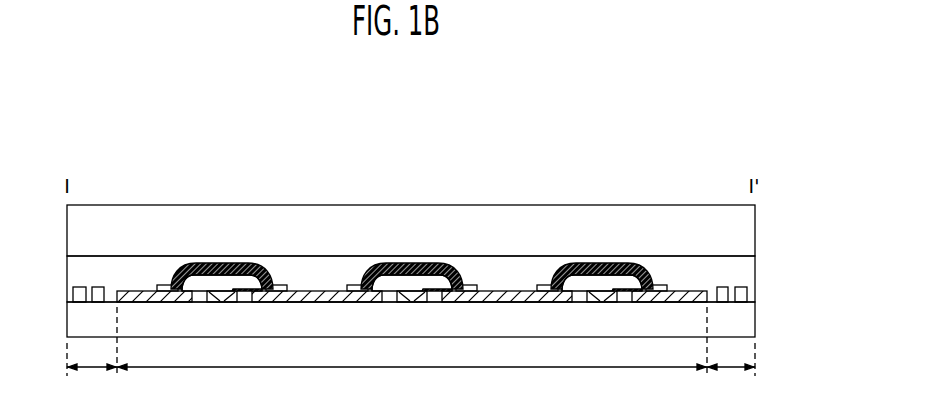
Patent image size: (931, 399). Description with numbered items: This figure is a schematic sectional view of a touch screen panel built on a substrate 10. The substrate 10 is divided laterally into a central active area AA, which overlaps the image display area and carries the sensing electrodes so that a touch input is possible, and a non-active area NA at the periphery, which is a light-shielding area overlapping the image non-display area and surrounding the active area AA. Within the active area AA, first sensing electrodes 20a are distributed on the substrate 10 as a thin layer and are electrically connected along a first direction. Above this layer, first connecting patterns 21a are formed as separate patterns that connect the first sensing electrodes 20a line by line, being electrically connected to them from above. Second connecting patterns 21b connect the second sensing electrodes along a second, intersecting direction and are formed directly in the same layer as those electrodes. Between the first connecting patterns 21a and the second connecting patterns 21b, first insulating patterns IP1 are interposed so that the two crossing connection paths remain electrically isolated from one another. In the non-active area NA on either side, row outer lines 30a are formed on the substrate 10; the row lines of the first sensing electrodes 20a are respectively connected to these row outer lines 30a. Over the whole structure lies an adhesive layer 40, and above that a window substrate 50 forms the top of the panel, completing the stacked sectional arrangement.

The substrate 10 is at (755, 320).
The adhesive layer 40 is at (755, 270).
The window substrate 50 is at (755, 232).
The first sensing electrodes 20a is at (137, 292).
The first connecting patterns 21a is at (200, 262).
The second connecting patterns 21b is at (228, 295).
The first insulating patterns IP1 is at (248, 282).
The row outer lines 30a is at (73, 295).
The non-active area NA is at (411, 379).
The active area AA is at (412, 380).